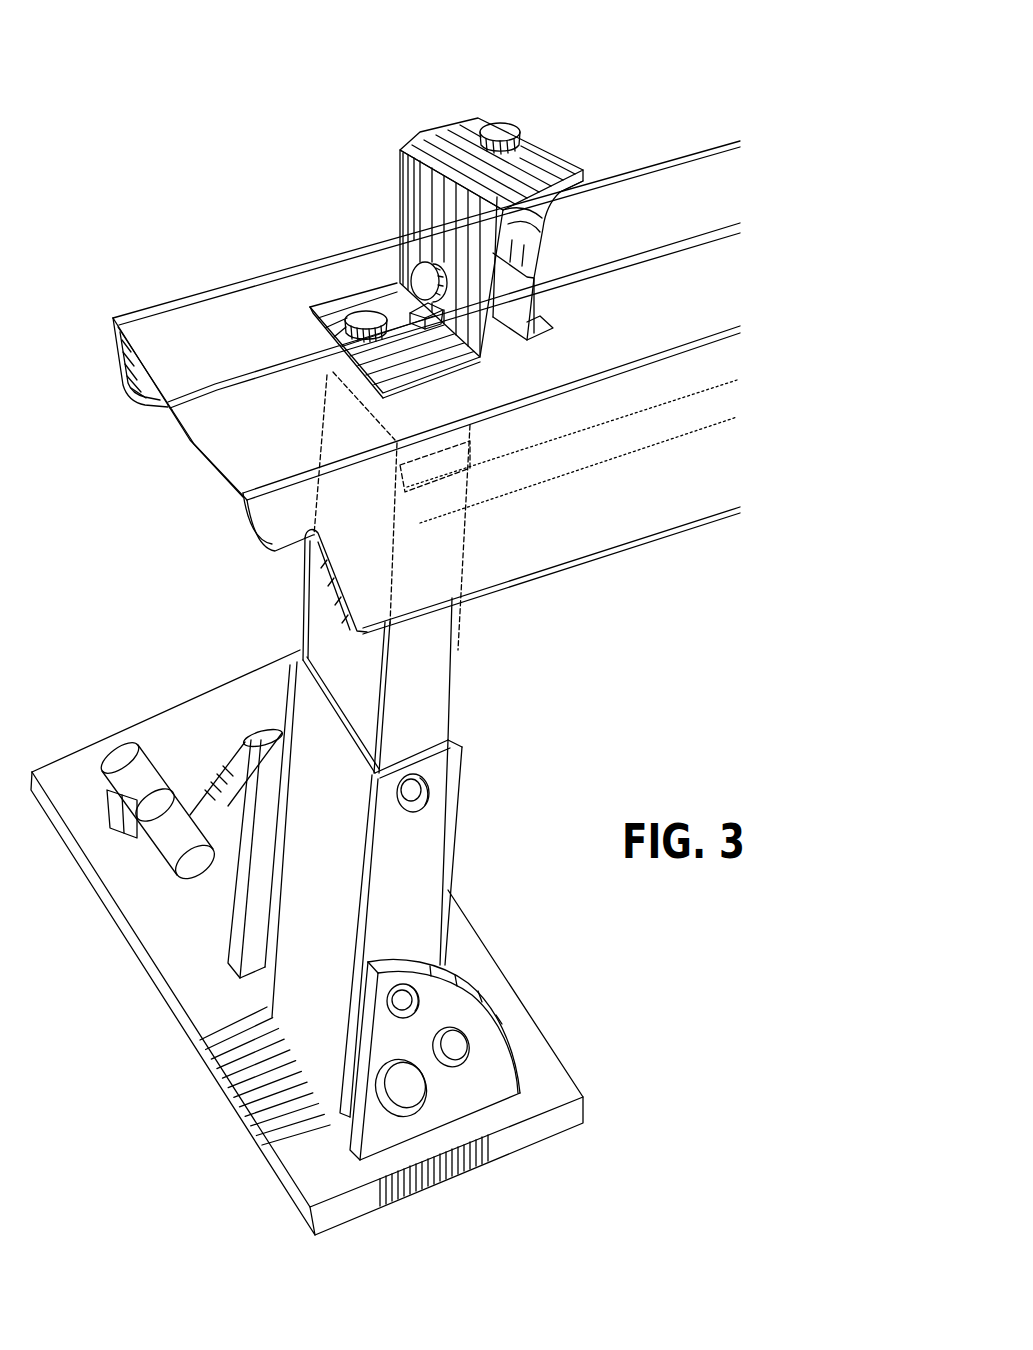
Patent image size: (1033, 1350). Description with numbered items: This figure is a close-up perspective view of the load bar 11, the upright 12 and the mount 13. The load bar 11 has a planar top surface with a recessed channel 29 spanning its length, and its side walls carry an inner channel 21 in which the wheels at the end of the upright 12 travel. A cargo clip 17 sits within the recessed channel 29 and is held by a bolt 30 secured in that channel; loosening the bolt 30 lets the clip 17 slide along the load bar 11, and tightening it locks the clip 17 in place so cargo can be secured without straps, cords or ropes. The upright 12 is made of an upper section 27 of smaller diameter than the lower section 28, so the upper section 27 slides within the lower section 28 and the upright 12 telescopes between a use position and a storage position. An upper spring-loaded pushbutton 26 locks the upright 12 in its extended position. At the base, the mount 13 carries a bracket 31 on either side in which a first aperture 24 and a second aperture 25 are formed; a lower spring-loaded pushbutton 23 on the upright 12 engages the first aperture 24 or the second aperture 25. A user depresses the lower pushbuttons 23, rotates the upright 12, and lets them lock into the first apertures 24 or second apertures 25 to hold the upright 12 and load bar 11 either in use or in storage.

The load bar 11 is at (150, 260).
The upright 12 is at (518, 693).
The mount 13 is at (570, 1073).
The cargo clip 17 is at (390, 86).
The inner channel 21 is at (657, 425).
The lower spring-loaded pushbutton 23 is at (420, 992).
The first aperture 24 is at (388, 1018).
The second aperture 25 is at (467, 1058).
The upper spring-loaded pushbutton 26 is at (428, 781).
The upper section 27 is at (317, 611).
The lower section 28 is at (280, 741).
The recessed channel 29 is at (283, 363).
The bolt 30 is at (367, 310).
The bracket 31 is at (485, 1024).